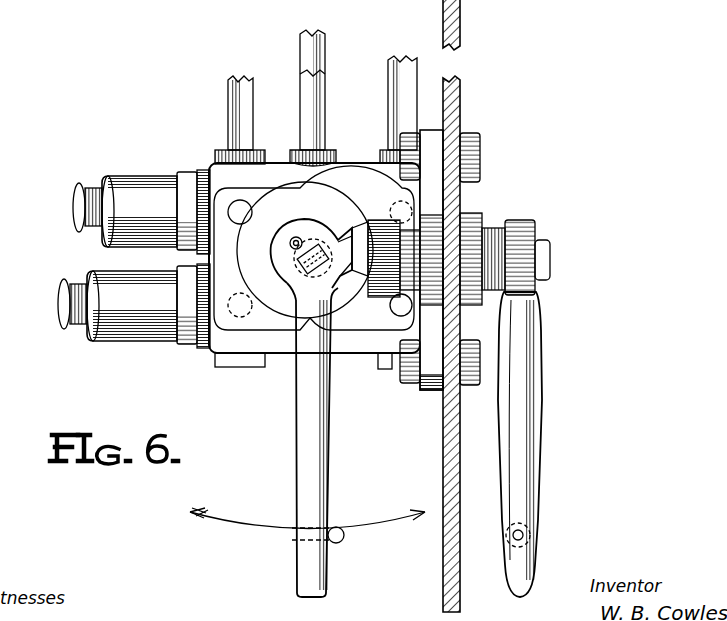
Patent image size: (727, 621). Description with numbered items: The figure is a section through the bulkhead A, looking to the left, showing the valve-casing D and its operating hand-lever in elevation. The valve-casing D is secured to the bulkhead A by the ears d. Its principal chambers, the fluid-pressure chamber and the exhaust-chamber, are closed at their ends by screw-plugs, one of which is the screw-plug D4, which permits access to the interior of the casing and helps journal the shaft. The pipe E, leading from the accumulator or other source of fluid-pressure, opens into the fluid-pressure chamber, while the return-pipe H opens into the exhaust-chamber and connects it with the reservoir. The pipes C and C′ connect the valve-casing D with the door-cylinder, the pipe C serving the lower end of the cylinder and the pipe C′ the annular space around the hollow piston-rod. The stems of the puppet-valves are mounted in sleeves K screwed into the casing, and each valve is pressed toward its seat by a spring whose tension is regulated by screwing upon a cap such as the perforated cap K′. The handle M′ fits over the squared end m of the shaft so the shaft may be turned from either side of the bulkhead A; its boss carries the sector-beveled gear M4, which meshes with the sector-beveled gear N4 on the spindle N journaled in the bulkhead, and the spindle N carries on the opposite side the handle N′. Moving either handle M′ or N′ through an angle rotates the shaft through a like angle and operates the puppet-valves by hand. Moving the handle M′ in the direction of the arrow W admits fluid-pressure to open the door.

The bulkhead A is at (455, 108).
The pipe C is at (245, 80).
The pipe C′ is at (395, 62).
The return-pipe H is at (322, 115).
The pipe E is at (306, 42).
The sleeve K is at (135, 185).
The cap K′ is at (62, 304).
The valve-casing D is at (314, 266).
The screw-plug D4 is at (305, 250).
The squared end of the shaft m is at (295, 249).
The sector-beveled gear M4 is at (352, 272).
The sector-beveled gear N4 is at (385, 297).
The ears d is at (428, 385).
The spindle N is at (550, 262).
The handle M′ is at (314, 448).
The handle N′ is at (537, 415).
The arrow W is at (307, 529).